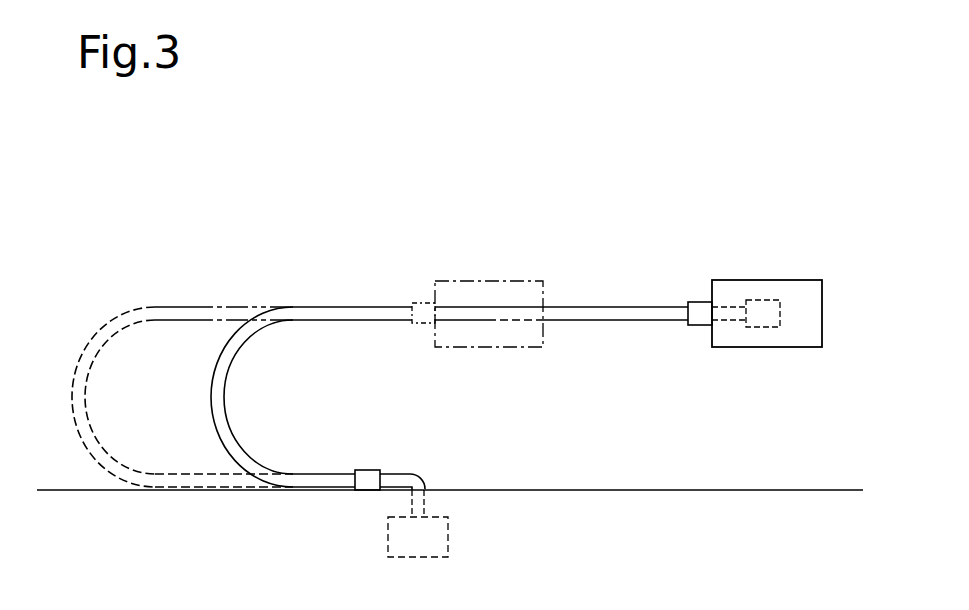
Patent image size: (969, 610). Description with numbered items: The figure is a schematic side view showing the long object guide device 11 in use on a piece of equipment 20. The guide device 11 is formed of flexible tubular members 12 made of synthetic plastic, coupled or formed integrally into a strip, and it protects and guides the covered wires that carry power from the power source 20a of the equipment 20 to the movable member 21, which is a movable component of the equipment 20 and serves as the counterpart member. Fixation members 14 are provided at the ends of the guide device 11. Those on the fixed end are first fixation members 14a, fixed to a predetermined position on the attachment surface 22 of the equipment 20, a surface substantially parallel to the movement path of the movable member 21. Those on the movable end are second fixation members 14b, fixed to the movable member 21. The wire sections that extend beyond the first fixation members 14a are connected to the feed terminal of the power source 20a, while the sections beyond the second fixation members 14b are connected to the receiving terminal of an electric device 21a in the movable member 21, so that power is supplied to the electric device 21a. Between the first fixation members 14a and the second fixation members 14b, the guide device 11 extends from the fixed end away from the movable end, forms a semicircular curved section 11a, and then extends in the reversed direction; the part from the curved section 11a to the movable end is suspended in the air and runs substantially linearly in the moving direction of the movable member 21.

The long object guide device 11 is at (228, 367).
The curved section 11a is at (76, 372).
The tubular member 12 is at (616, 306).
The fixation member 14 is at (556, 354).
The first fixation member 14a is at (369, 470).
The second fixation member 14b is at (420, 303).
The equipment 20 is at (450, 461).
The power source 20a is at (449, 535).
The movable member 21 is at (636, 295).
The electric device 21a is at (763, 327).
The attachment surface 22 is at (564, 489).